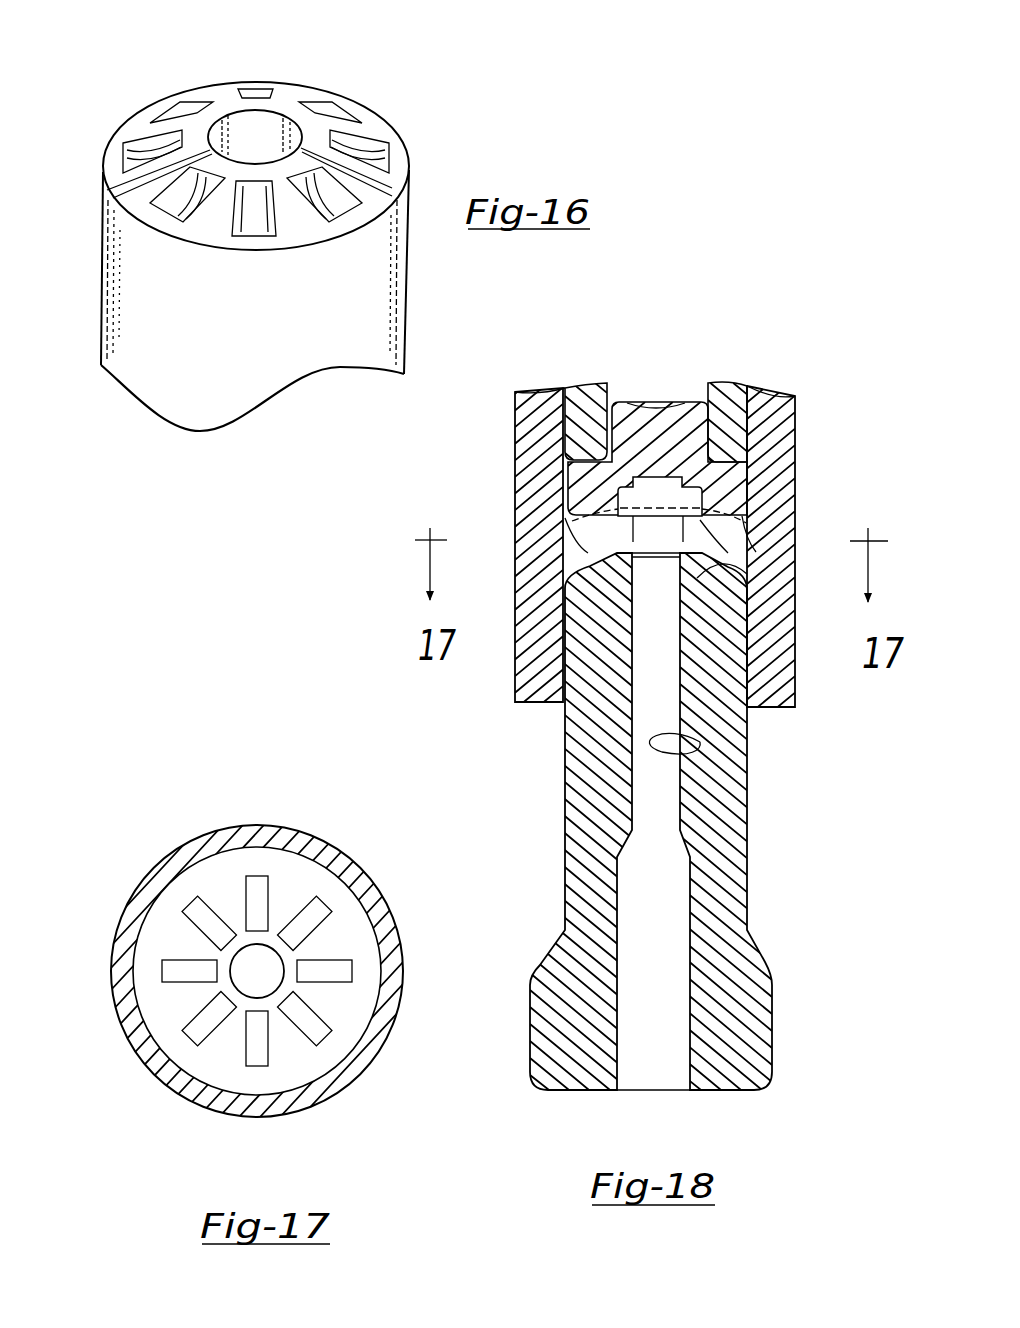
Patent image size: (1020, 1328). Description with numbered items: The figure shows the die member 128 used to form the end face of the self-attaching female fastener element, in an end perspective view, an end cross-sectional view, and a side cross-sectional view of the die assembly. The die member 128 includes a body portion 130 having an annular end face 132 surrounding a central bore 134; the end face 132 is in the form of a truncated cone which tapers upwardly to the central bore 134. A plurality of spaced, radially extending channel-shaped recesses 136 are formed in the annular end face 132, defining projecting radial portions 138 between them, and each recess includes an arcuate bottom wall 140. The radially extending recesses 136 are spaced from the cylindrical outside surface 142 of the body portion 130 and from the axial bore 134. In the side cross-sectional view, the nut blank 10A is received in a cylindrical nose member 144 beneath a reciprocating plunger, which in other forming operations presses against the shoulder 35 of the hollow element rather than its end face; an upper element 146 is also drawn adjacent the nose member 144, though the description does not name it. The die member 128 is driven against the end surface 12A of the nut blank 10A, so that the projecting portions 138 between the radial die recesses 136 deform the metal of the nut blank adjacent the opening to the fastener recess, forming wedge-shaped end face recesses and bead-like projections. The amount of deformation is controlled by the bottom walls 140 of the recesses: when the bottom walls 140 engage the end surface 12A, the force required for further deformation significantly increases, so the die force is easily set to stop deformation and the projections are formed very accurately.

In FIG. 18, the nut blank 10A is at (694, 402).
In FIG. 18, the end surface of the nut blank 12A is at (748, 548).
In FIG. 18, the shoulder 35 is at (727, 445).
In FIG. 16, the die member 128 is at (277, 66).
In FIG. 17, the die member 128 is at (274, 864).
In FIG. 18, the die member 128 is at (562, 800).
In FIG. 16, the body portion 130 is at (231, 362).
In FIG. 18, the body portion 130 is at (723, 800).
In FIG. 16, the annular end face 132 is at (200, 239).
In FIG. 17, the annular end face 132 is at (327, 882).
In FIG. 18, the annular end face 132 is at (590, 555).
In FIG. 16, the central bore 134 is at (277, 121).
In FIG. 17, the central bore 134 is at (250, 990).
In FIG. 18, the central bore 134 is at (695, 748).
In FIG. 16, the channel-shaped recesses 136 is at (335, 237).
In FIG. 17, the channel-shaped recesses 136 is at (317, 920).
In FIG. 16, the projecting radial portions 138 is at (218, 95).
In FIG. 17, the projecting radial portions 138 is at (228, 900).
In FIG. 18, the projecting radial portions 138 is at (585, 566).
In FIG. 16, the arcuate bottom wall 140 is at (375, 232).
In FIG. 17, the arcuate bottom wall 140 is at (258, 1062).
In FIG. 18, the arcuate bottom wall 140 is at (713, 563).
In FIG. 16, the cylindrical outside surface 142 is at (132, 343).
In FIG. 17, the cylindrical outside surface 142 is at (373, 1018).
In FIG. 18, the cylindrical nose member 144 is at (525, 453).
In FIG. 18, the cap 146 is at (580, 395).